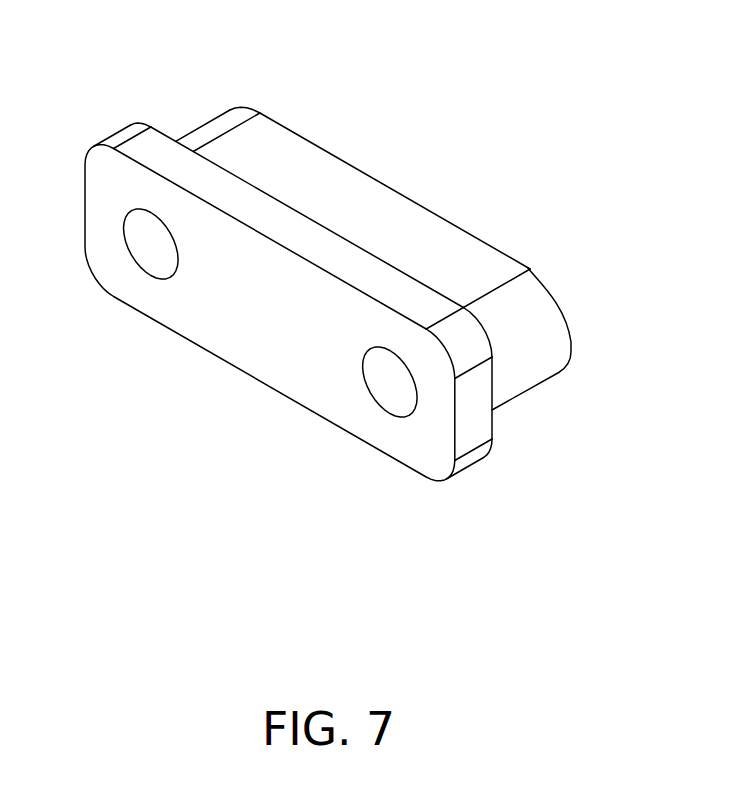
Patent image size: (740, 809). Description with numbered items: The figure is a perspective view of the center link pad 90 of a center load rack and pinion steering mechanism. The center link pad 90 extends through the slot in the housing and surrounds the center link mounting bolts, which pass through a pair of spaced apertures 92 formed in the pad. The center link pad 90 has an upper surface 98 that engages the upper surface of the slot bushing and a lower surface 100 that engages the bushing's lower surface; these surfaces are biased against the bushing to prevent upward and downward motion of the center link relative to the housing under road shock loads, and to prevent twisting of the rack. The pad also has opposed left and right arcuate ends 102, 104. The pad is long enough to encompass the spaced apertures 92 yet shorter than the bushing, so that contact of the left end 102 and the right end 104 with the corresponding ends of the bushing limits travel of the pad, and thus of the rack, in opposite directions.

The center link pad 90 is at (250, 328).
The spaced apertures 92 is at (150, 244).
The upper surface 98 is at (463, 248).
The lower surface 100 is at (531, 410).
The left arcuate end 102 is at (193, 129).
The right arcuate end 104 is at (537, 335).